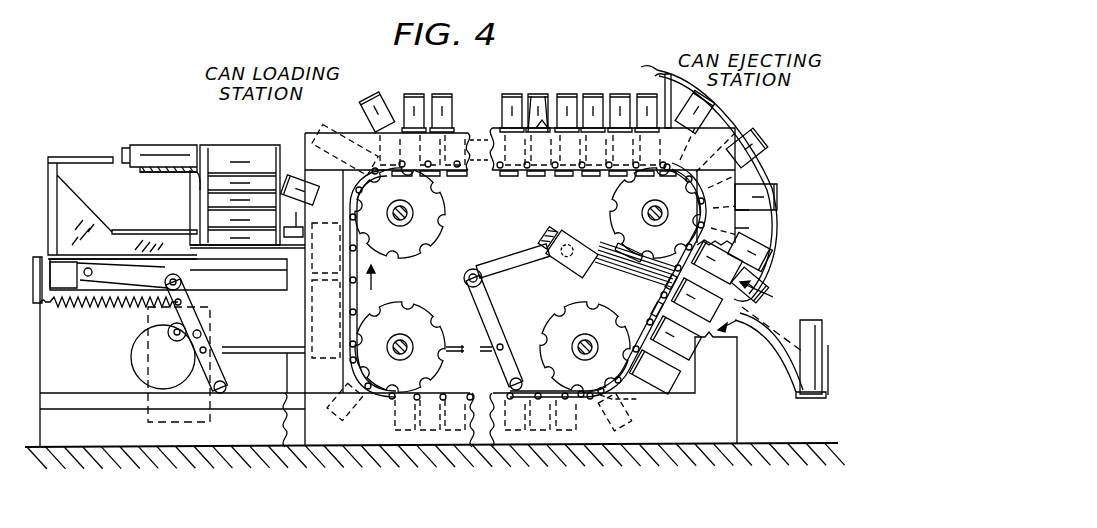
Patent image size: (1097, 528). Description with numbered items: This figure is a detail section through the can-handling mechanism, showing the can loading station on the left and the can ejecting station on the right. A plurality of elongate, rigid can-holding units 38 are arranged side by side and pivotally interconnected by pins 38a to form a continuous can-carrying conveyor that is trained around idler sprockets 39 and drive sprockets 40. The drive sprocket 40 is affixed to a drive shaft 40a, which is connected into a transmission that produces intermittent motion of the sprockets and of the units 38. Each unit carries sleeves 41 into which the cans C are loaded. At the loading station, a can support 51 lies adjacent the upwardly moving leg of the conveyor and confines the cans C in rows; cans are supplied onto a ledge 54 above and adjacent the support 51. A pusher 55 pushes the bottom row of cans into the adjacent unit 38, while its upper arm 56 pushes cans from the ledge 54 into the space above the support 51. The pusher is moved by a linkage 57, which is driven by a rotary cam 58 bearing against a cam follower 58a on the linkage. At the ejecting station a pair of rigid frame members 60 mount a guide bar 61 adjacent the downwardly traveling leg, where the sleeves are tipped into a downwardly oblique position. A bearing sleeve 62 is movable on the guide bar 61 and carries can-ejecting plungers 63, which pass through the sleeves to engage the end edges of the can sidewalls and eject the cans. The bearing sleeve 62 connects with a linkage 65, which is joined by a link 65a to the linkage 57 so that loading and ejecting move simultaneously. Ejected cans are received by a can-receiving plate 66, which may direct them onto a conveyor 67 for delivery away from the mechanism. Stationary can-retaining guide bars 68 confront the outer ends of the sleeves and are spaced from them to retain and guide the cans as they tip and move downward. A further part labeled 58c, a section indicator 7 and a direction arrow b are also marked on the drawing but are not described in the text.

The cans C is at (507, 100).
The can-holding units 38 is at (494, 150).
The pins 38a is at (552, 177).
The idler sprockets 39 is at (428, 252).
The drive sprockets 40 is at (642, 221).
The drive shaft 40a is at (674, 192).
The sleeves 41 is at (750, 217).
The can support 51 is at (216, 247).
The ledge 54 is at (170, 174).
The pusher 55 is at (154, 228).
The upper arm 56 is at (84, 138).
The linkage 57 is at (176, 310).
The rotary cam 58 is at (136, 360).
The cam follower 58a is at (201, 334).
The cam roller 58c is at (177, 342).
The rigid frame members 60 is at (638, 314).
The guide bar 61 is at (595, 280).
The bearing sleeve 62 is at (566, 250).
The can-ejecting plungers 63 is at (636, 256).
The linkage 65 is at (505, 266).
The link 65a is at (248, 352).
The can-receiving plate 66 is at (773, 350).
The conveyor 67 is at (811, 400).
The stationary can-retaining guide bars 68 is at (737, 120).
The section line 7 is at (746, 324).
The direction arrow b is at (378, 281).